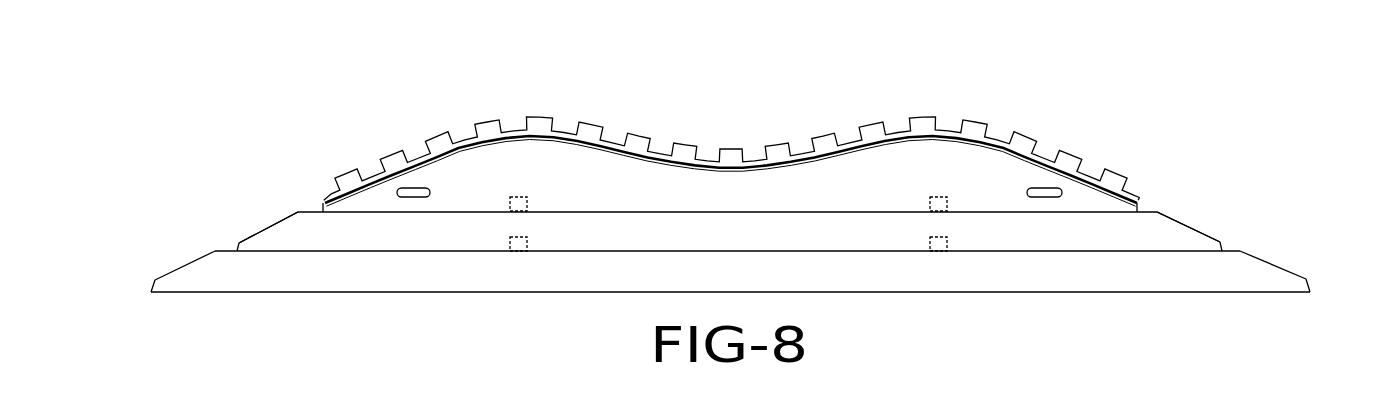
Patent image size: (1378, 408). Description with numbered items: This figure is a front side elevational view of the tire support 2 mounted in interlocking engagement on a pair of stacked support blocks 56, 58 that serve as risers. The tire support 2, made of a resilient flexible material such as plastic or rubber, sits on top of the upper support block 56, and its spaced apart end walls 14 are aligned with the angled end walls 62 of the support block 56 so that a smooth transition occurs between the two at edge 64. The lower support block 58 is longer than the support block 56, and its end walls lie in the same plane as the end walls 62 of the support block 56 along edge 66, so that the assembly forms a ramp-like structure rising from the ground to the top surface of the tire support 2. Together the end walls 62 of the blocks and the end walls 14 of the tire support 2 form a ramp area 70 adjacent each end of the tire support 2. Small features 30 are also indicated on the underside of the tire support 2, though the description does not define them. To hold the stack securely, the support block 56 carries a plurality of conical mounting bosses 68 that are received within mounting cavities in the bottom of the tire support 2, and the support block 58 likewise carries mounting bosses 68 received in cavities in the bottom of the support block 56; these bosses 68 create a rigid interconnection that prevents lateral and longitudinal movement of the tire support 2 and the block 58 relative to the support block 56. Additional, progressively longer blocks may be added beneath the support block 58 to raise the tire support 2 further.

The tire support 2 is at (1024, 121).
The end walls 14 is at (527, 107).
The pin 30 is at (408, 188).
The support block 56 is at (1017, 243).
The support block 58 is at (1083, 275).
The angled end walls 62 is at (268, 226).
The edge 64 is at (320, 212).
The edge 66 is at (237, 247).
The mounting bosses 68 is at (525, 198).
The ramp area 70 is at (197, 238).